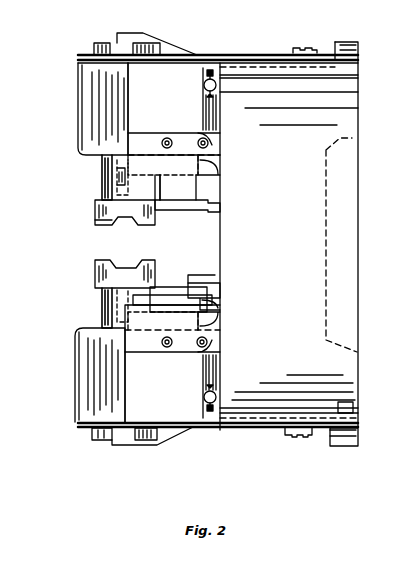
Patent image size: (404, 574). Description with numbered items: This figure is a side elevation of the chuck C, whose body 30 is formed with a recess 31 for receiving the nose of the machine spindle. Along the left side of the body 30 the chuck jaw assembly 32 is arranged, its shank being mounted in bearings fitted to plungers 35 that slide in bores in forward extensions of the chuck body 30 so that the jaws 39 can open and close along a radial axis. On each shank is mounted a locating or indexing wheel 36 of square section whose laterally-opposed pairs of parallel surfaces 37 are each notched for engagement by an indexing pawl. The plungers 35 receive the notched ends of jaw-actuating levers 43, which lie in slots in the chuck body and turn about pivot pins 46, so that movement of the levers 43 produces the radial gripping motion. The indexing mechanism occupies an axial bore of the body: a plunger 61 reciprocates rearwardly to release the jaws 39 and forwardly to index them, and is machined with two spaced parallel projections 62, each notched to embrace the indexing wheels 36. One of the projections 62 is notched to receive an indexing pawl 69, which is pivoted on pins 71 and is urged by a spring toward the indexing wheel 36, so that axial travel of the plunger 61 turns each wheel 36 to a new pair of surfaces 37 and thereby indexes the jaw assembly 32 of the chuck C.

The reel assembly 30 is at (264, 51).
The recess 31 is at (344, 142).
The chuck jaw assembly 32 is at (95, 205).
The plungers 35 is at (108, 44).
The locating or indexing wheel 36 is at (101, 173).
The parallel surfaces 37 is at (95, 220).
The jaws 39 is at (95, 272).
The jaw-actuating levers 43 is at (142, 34).
The pivot pins 46 is at (203, 86).
The plunger 61 is at (213, 209).
The projections 62 is at (172, 192).
The indexing pawl 69 is at (178, 287).
The pins 71 is at (170, 137).
The chuck C is at (360, 394).